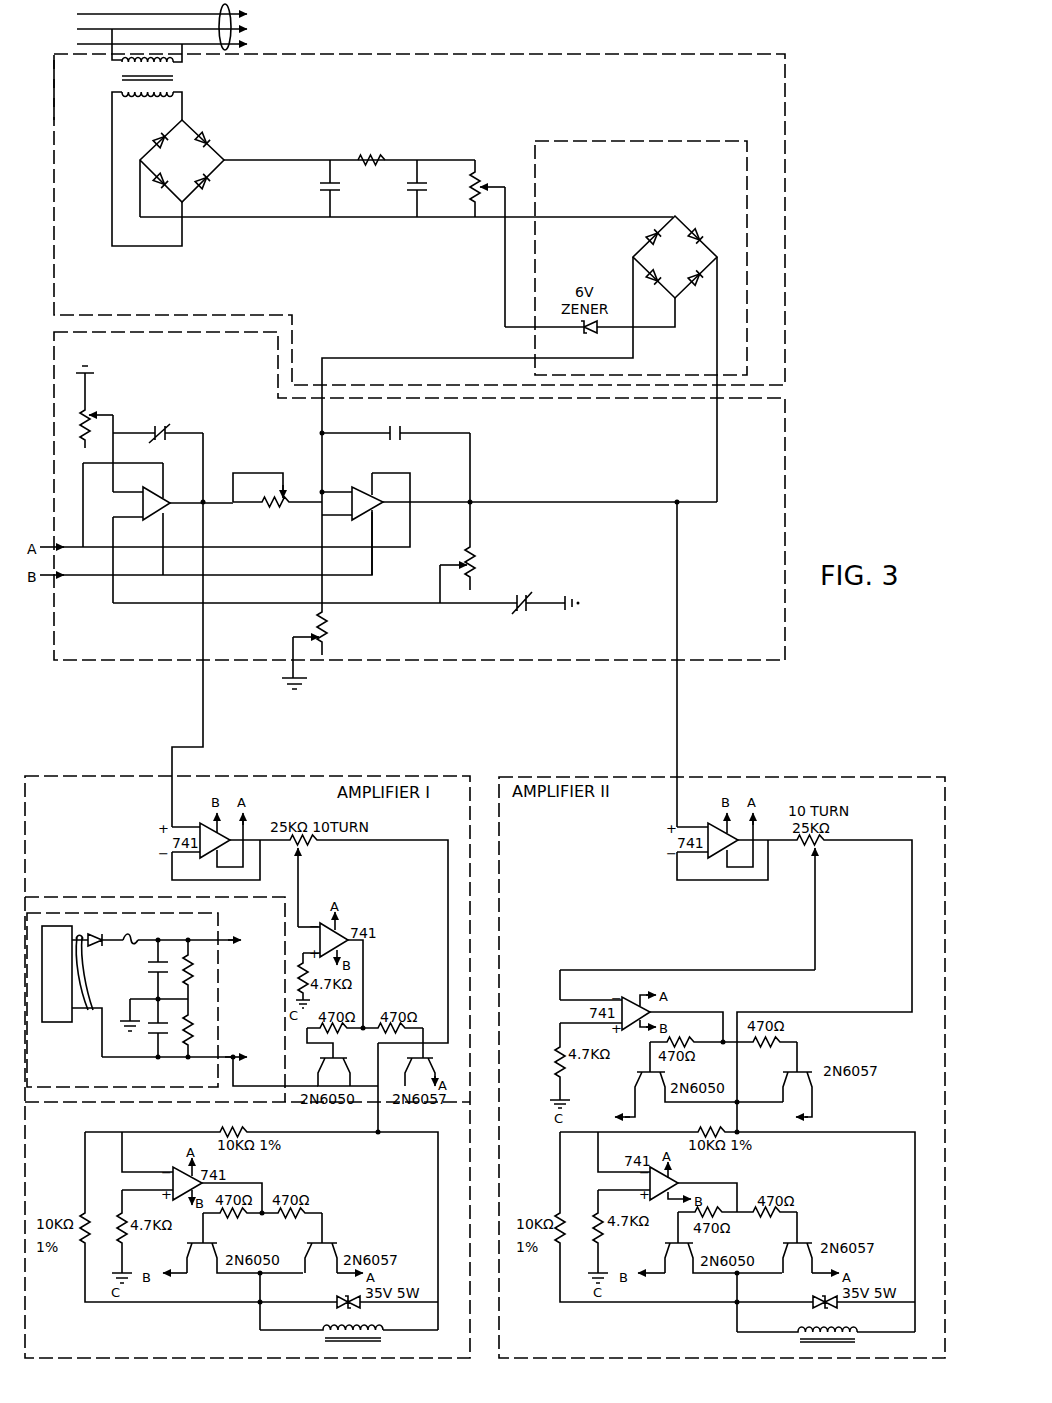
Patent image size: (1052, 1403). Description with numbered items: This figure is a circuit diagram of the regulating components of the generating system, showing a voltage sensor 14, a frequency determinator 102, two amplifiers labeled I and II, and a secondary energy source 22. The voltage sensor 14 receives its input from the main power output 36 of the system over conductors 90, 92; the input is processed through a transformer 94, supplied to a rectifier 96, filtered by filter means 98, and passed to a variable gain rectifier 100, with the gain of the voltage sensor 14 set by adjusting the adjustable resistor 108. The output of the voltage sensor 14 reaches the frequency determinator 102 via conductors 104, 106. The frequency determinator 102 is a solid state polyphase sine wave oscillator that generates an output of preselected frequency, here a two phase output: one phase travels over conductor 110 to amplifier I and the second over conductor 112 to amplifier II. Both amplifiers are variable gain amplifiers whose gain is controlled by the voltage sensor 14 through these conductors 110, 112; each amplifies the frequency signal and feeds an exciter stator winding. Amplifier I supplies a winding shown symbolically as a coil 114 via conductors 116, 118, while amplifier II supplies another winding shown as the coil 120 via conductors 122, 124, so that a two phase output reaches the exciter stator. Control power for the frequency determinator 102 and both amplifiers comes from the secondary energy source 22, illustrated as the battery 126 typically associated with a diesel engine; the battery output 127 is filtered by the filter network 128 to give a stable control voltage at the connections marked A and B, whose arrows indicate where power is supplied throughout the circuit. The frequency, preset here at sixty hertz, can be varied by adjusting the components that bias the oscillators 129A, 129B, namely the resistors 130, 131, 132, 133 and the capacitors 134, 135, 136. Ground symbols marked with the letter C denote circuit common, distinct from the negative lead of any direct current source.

The voltage sensor 14 is at (753, 62).
The secondary energy source 22 is at (143, 998).
The main power output 36 is at (231, 7).
The conductor 90 is at (112, 34).
The conductor 92 is at (180, 66).
The transformer 94 is at (50, 66).
The rectifier 96 is at (214, 137).
The filter means 98 is at (416, 147).
The variable gain rectifier 100 is at (737, 172).
The frequency determinator 102 is at (773, 436).
The conductor 104 is at (717, 346).
The conductor 106 is at (633, 268).
The adjustable resistor 108 is at (468, 207).
The conductor 110 is at (203, 727).
The conductor 112 is at (677, 705).
The coil 114 is at (322, 1332).
The conductor 116 is at (439, 1330).
The conductor 118 is at (260, 1318).
The coil 120 is at (797, 1334).
The conductor 122 is at (915, 1332).
The conductor 124 is at (737, 1320).
The battery 126 is at (68, 1022).
The battery output 127 is at (88, 1010).
The filter network 128 is at (143, 968).
The oscillator 129A is at (157, 522).
The oscillator 129B is at (367, 522).
The resistor 130 is at (80, 418).
The resistor 131 is at (285, 474).
The resistor 132 is at (318, 618).
The resistor 133 is at (474, 548).
The capacitor 134 is at (522, 602).
The capacitor 135 is at (401, 441).
The capacitor 136 is at (153, 439).